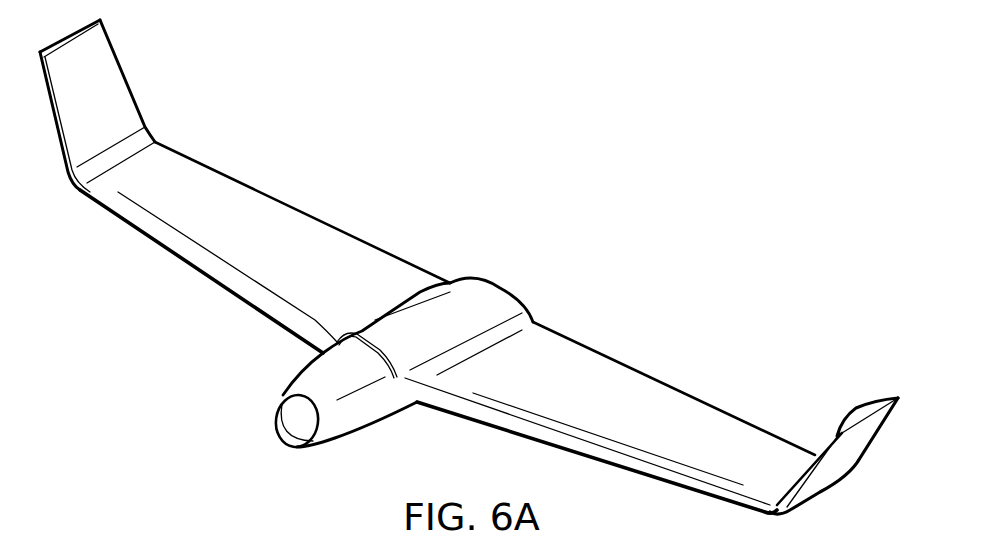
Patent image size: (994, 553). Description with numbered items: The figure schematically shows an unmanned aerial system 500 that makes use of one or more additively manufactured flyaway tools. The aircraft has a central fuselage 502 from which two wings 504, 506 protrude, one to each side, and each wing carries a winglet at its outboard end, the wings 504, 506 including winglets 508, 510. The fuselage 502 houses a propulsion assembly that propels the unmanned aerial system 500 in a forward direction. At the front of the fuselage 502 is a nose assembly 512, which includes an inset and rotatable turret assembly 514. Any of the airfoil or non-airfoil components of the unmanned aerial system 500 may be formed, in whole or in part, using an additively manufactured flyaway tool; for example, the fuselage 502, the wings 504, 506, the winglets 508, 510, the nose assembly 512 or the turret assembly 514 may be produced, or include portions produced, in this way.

The unmanned aerial system 500 is at (469, 267).
The fuselage 502 is at (460, 303).
The wing 504 is at (667, 400).
The wing 506 is at (285, 218).
The winglet 508 is at (867, 412).
The winglet 510 is at (108, 60).
The nose assembly 512 is at (277, 449).
The turret assembly 514 is at (287, 417).